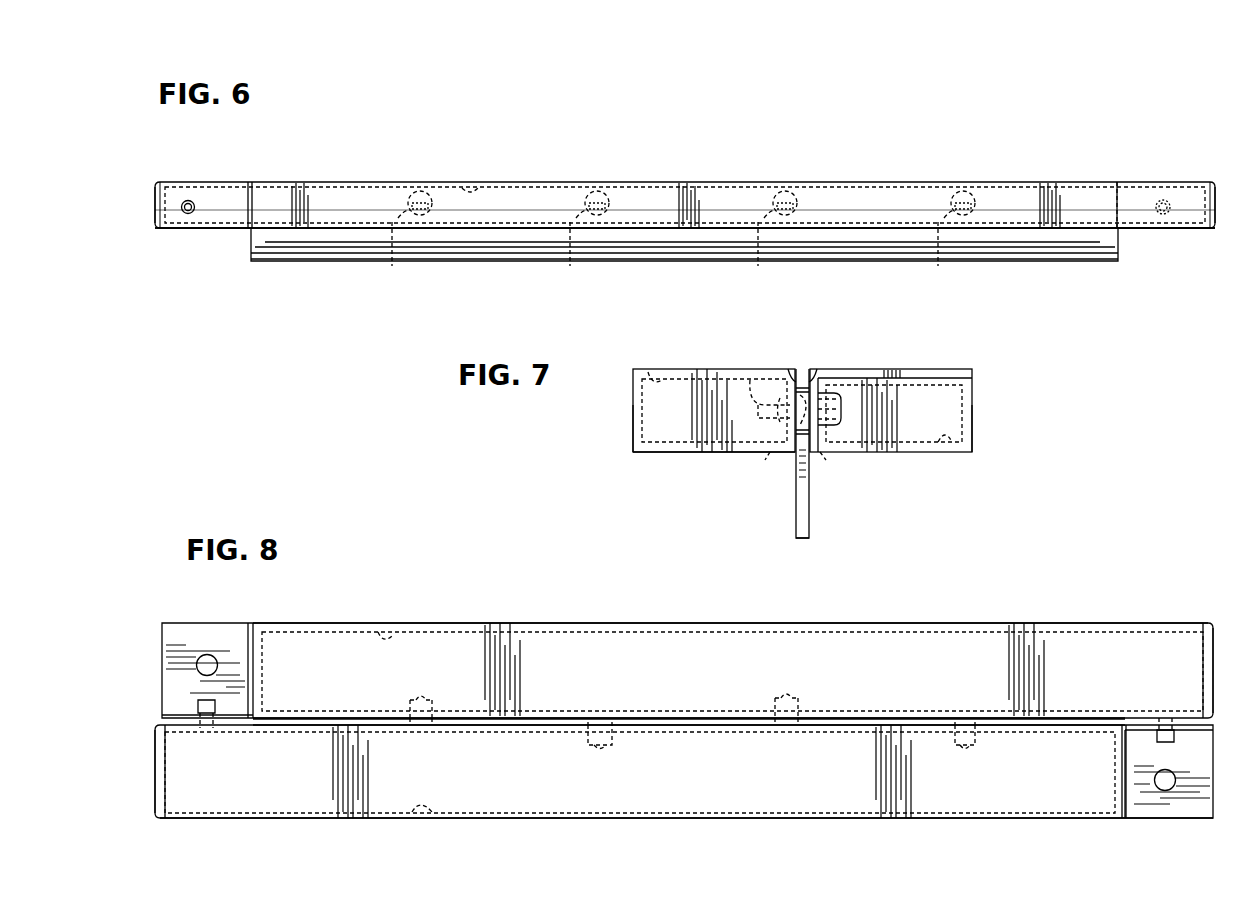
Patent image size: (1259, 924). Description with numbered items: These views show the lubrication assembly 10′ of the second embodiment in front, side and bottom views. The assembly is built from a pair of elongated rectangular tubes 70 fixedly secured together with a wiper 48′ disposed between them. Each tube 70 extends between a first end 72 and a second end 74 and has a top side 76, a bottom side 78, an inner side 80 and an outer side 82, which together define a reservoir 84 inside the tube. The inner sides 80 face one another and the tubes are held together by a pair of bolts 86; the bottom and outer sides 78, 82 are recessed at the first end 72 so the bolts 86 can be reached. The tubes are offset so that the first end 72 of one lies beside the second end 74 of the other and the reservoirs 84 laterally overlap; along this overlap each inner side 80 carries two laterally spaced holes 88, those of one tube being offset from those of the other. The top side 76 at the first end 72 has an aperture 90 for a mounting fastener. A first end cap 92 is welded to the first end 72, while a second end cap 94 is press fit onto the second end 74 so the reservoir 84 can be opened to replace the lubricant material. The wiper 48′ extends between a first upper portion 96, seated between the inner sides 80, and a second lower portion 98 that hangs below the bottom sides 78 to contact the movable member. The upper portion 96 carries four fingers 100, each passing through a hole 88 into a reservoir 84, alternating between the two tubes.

In FIG. 6, the lubrication assembly 10′ is at (368, 124).
In FIG. 7, the lubrication assembly 10′ is at (1018, 338).
In FIG. 8, the lubrication assembly 10′ is at (1132, 572).
In FIG. 6, the wiper 48′ is at (1120, 249).
In FIG. 7, the wiper 48′ is at (806, 505).
In FIG. 8, the wiper 48′ is at (690, 720).
In FIG. 6, the elongated rectangular tube 70 is at (1060, 183).
In FIG. 7, the elongated rectangular tube 70 is at (650, 455).
In FIG. 8, the elongated rectangular tube 70 is at (1096, 624).
In FIG. 6, the first end 72 is at (263, 192).
In FIG. 7, the first end 72 is at (936, 384).
In FIG. 8, the first end 72 is at (266, 641).
In FIG. 6, the second end 74 is at (1184, 192).
In FIG. 7, the second end 74 is at (696, 442).
In FIG. 8, the second end 74 is at (1181, 641).
In FIG. 6, the top side 76 is at (688, 185).
In FIG. 7, the top side 76 is at (672, 369).
In FIG. 8, the top side 76 is at (688, 720).
In FIG. 6, the bottom side 78 is at (1206, 236).
In FIG. 7, the bottom side 78 is at (736, 455).
In FIG. 8, the bottom side 78 is at (958, 678).
In FIG. 7, the inner side 80 is at (792, 372).
In FIG. 8, the inner side 80 is at (1069, 720).
In FIG. 6, the outer side 82 is at (872, 219).
In FIG. 7, the outer side 82 is at (633, 406).
In FIG. 8, the outer side 82 is at (505, 628).
In FIG. 6, the reservoir 84 is at (474, 188).
In FIG. 7, the reservoir 84 is at (650, 374).
In FIG. 8, the reservoir 84 is at (382, 634).
In FIG. 6, the bolt 86 is at (190, 214).
In FIG. 7, the bolt 86 is at (836, 396).
In FIG. 8, the bolt 86 is at (200, 706).
In FIG. 6, the hole 88 is at (669, 248).
In FIG. 7, the hole 88 is at (786, 440).
In FIG. 8, the hole 88 is at (410, 716).
In FIG. 8, the aperture 90 is at (206, 655).
In FIG. 6, the first end cap 92 is at (250, 196).
In FIG. 8, the first end cap 92 is at (249, 652).
In FIG. 6, the second end cap 94 is at (157, 203).
In FIG. 8, the second end cap 94 is at (1222, 651).
In FIG. 6, the first upper portion 96 is at (850, 185).
In FIG. 7, the first upper portion 96 is at (802, 372).
In FIG. 6, the second lower portion 98 is at (482, 255).
In FIG. 7, the second lower portion 98 is at (800, 536).
In FIG. 6, the finger 100 is at (416, 190).
In FIG. 7, the finger 100 is at (762, 398).
In FIG. 8, the finger 100 is at (424, 700).